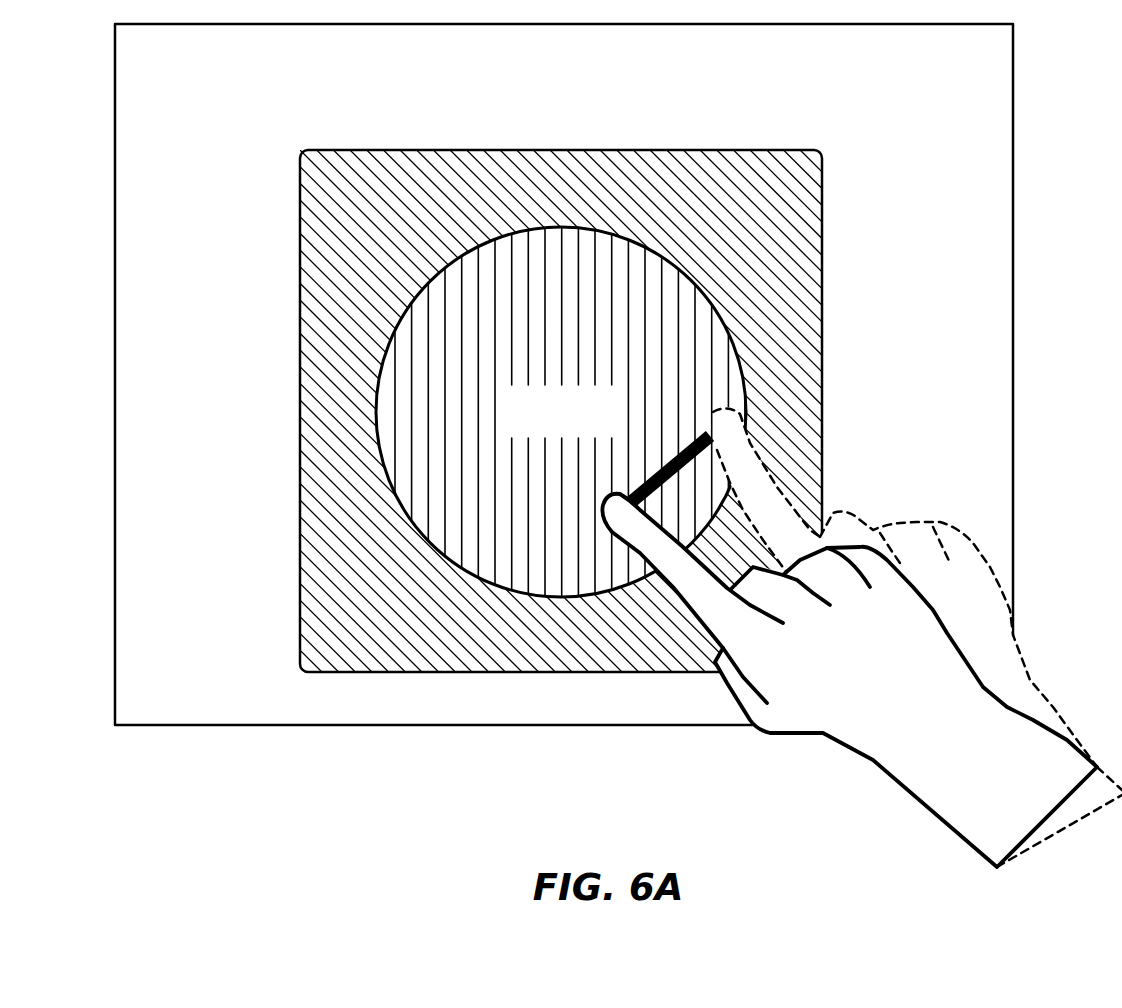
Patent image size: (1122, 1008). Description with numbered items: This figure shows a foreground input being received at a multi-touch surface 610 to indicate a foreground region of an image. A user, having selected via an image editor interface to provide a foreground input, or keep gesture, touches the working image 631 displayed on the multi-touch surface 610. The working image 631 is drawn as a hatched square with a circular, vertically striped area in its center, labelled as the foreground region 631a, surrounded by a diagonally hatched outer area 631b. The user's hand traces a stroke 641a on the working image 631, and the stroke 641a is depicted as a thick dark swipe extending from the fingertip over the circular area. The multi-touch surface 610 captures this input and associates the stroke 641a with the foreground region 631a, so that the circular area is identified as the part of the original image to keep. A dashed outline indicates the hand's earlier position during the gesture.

The multi-touch surface 610 is at (564, 374).
The working image 631 is at (457, 672).
The foreground region 631a is at (561, 412).
The outer hatched region of control element 631b is at (608, 632).
The stroke 641a is at (683, 422).